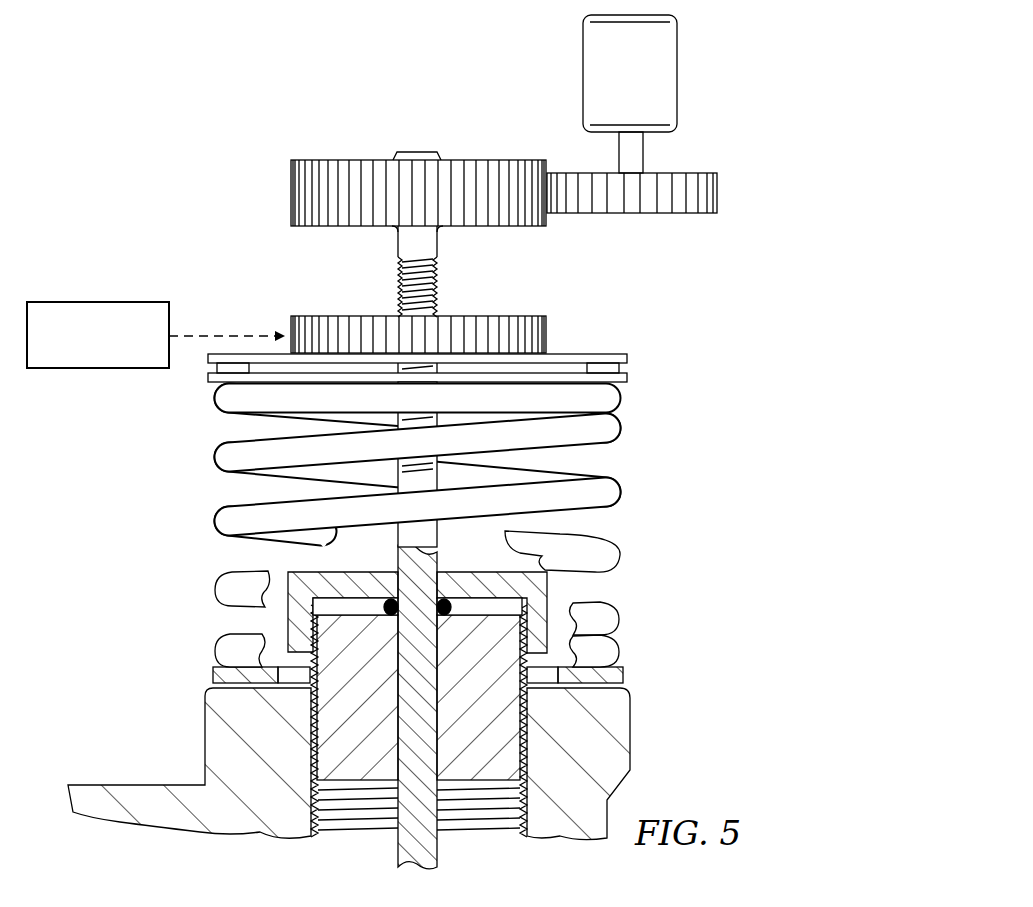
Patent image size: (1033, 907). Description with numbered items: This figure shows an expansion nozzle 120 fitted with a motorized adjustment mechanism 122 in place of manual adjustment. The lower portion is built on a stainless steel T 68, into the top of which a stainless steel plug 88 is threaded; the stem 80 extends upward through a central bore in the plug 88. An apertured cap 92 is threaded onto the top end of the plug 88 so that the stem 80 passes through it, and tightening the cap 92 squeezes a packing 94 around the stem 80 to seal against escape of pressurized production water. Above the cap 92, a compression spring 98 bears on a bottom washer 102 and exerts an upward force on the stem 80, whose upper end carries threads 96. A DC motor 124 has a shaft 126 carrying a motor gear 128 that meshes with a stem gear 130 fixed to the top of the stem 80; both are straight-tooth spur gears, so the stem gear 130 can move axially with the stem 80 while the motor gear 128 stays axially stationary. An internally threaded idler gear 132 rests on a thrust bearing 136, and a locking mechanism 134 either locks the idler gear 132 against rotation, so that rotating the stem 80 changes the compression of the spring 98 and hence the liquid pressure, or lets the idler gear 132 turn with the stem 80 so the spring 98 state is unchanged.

The T 68 is at (632, 751).
The stem 80 is at (437, 853).
The plug 88 is at (318, 737).
The cap 92 is at (548, 596).
The packing 94 is at (446, 601).
The threads 96 is at (437, 284).
The compression spring 98 is at (619, 628).
The bottom washer 102 is at (623, 676).
The expansion nozzle 120 is at (103, 160).
The motorized adjustment mechanism 122 is at (517, 130).
The DC motor 124 is at (677, 63).
The shaft 126 is at (643, 152).
The motor gear 128 is at (717, 193).
The stem gear 130 is at (291, 188).
The idler gear 132 is at (546, 334).
The locking mechanism 134 is at (95, 302).
The thrust bearing 136 is at (627, 357).